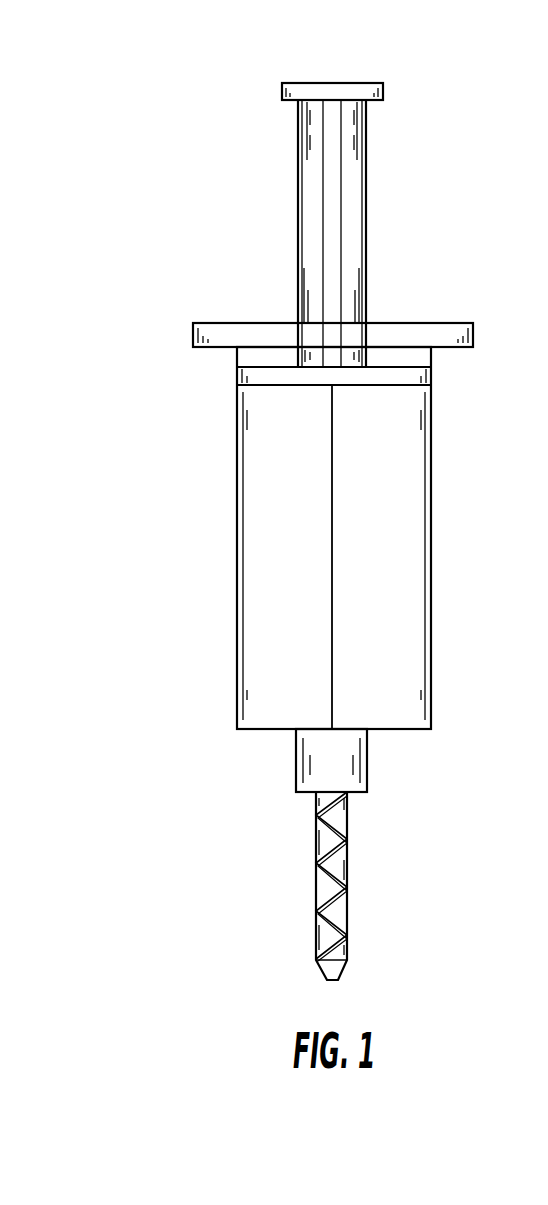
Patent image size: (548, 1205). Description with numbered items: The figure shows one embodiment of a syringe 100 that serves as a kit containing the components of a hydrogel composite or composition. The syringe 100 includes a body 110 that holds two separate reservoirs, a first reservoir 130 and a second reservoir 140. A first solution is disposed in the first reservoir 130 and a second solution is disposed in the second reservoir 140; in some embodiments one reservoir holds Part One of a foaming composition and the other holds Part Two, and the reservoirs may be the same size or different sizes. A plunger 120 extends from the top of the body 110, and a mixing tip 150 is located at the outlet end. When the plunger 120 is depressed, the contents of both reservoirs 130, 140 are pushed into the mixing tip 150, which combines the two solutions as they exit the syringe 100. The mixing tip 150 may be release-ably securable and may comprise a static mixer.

The syringe 100 is at (130, 52).
The body 110 is at (198, 333).
The plunger 120 is at (352, 180).
The first reservoir 130 is at (258, 535).
The second reservoir 140 is at (405, 535).
The mixing tip 150 is at (325, 887).